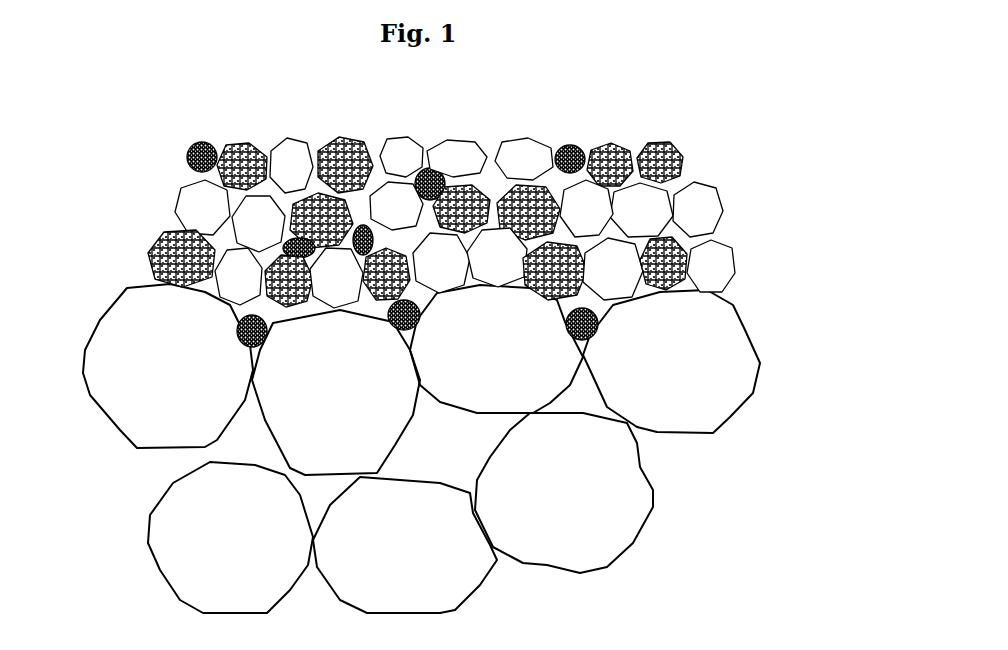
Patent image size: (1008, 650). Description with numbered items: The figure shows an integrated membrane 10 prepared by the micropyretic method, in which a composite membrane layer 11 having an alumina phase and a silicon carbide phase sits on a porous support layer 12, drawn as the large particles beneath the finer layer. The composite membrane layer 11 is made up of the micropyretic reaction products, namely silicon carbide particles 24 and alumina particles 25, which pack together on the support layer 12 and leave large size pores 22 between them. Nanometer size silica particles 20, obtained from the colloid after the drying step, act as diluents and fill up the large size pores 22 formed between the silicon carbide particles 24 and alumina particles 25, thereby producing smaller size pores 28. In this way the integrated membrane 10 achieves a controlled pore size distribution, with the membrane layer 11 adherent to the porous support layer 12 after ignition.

The integrated membrane 10 is at (108, 545).
The composite membrane layer 11 is at (748, 227).
The support layer 12 is at (773, 363).
The silica particles 20 is at (200, 143).
The large size pores 22 is at (620, 228).
The silicon carbide particles 24 is at (335, 137).
The alumina particles 25 is at (512, 137).
The smaller size pores 28 is at (430, 170).